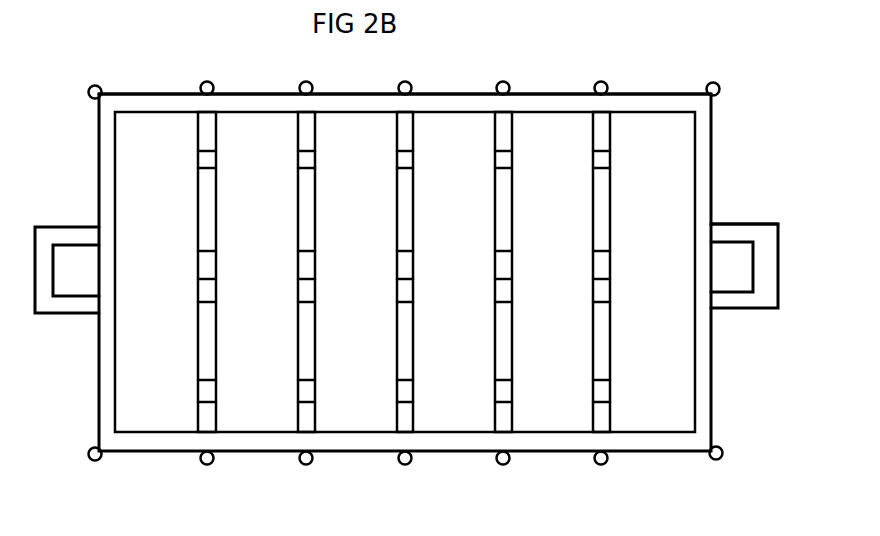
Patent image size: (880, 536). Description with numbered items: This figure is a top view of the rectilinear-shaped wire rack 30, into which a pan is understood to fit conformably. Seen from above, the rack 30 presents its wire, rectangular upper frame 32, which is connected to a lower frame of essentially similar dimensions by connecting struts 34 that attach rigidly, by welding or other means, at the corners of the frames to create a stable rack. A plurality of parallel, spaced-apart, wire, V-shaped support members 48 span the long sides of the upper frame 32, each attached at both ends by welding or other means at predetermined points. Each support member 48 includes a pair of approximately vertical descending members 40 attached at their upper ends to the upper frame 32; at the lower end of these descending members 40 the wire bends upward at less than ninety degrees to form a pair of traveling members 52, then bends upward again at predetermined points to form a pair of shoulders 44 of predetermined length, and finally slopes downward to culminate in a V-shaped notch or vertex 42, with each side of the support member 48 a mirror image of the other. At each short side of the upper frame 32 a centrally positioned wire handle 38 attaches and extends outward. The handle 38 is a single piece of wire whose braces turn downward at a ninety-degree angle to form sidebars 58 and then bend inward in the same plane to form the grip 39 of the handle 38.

The rack 30 is at (713, 348).
The upper frame 32 is at (632, 95).
The connecting struts 34 is at (88, 88).
The wire handle 38 is at (73, 318).
The grip 39 is at (780, 272).
The vertical descending members 40 is at (202, 85).
The V-shaped notch or vertex 42 is at (217, 282).
The shoulders 44 is at (198, 223).
The V-shaped support members 48 is at (195, 177).
The traveling members 52 is at (215, 123).
The sidebars 58 is at (722, 220).